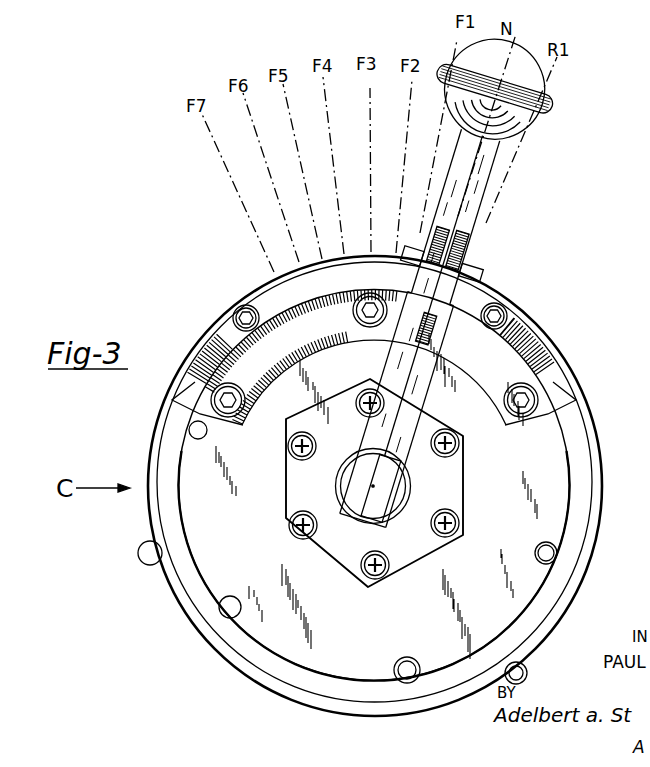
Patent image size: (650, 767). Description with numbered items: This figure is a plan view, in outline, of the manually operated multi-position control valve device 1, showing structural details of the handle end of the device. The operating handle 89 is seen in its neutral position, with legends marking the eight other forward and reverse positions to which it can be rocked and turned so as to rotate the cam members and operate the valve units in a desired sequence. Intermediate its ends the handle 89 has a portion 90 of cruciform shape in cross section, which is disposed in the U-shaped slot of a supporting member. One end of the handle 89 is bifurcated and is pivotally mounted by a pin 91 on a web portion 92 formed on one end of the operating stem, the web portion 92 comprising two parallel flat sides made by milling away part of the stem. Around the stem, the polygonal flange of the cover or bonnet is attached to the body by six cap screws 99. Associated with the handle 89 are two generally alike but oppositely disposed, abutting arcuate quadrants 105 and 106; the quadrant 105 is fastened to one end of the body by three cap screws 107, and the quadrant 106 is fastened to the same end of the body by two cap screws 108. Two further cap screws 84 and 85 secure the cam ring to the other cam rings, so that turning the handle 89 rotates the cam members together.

The control valve device 1 is at (614, 531).
The cap screw 84 is at (524, 667).
The cap screw 85 is at (146, 553).
The operating handle 89 is at (435, 281).
The portion of cruciform shape 90 is at (468, 221).
The pin 91 is at (356, 481).
The web portion 92 is at (381, 489).
The cap screws 99 is at (440, 562).
The quadrant 105 is at (505, 365).
The quadrant 106 is at (470, 297).
The cap screws 107 is at (353, 305).
The cap screws 108 is at (234, 314).